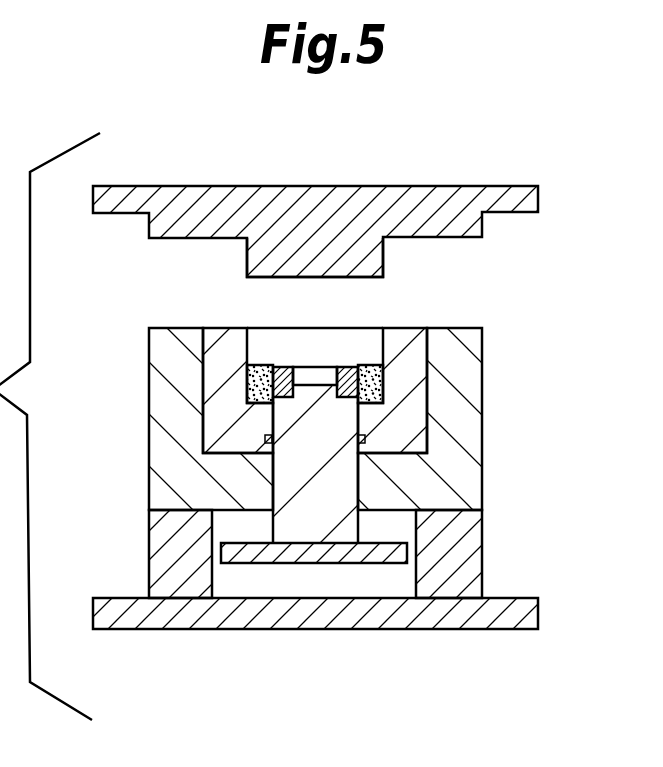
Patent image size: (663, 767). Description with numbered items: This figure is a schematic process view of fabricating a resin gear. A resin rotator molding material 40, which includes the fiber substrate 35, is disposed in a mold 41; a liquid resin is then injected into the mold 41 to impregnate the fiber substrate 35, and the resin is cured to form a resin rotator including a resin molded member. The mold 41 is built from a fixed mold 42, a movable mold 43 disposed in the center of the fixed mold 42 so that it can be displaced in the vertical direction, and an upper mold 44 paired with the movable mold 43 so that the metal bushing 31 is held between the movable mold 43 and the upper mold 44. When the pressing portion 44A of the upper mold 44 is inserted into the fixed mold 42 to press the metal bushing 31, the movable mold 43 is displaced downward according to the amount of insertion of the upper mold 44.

The upper mold 44 is at (360, 197).
The pressing portion 44A is at (273, 253).
The mold 41 is at (492, 345).
The fixed mold 42 is at (413, 425).
The fiber substrate 35 is at (383, 380).
The resin rotator molding material 40 is at (372, 366).
The metal bushing 31 is at (348, 367).
The movable mold 43 is at (318, 523).